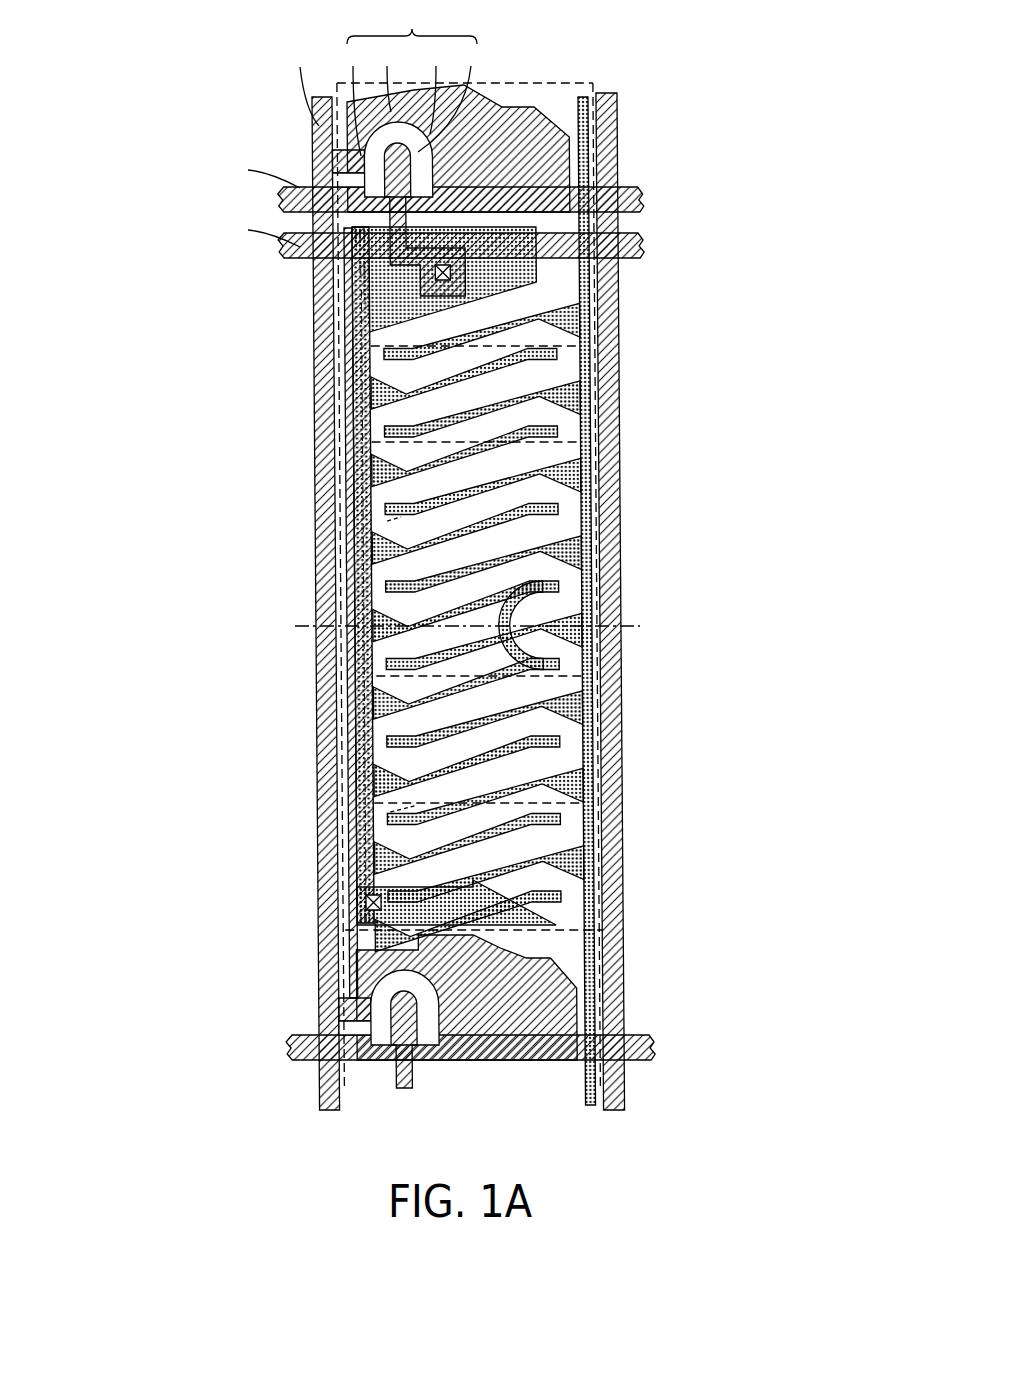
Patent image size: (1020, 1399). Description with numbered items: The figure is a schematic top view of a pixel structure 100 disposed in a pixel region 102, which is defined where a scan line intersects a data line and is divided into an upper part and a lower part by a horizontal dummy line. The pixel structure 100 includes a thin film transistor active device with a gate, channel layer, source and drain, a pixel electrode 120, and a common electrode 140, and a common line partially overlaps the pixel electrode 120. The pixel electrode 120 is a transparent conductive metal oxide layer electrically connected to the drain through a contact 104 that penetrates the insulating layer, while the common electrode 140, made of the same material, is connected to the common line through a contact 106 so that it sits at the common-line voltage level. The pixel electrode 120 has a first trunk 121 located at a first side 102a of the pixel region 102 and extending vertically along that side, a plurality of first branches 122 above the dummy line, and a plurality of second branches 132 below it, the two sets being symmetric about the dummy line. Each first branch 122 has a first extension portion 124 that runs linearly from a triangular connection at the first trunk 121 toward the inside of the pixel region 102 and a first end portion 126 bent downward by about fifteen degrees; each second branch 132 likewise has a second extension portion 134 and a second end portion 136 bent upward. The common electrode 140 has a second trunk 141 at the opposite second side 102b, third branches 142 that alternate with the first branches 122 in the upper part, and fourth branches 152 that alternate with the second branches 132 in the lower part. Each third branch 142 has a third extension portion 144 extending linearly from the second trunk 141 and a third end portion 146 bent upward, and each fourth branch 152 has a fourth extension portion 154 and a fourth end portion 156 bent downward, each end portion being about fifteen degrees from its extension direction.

The pixel structure 100 is at (413, 611).
The pixel region 102 is at (532, 82).
The first side 102a is at (343, 520).
The second side 102b is at (596, 499).
The contact 104 is at (538, 260).
The contact 106 is at (363, 902).
The pixel electrode 120 is at (410, 723).
The first trunk 121 is at (352, 318).
The first branches 122 is at (559, 486).
The first extension portion 124 is at (548, 362).
The first end portion 126 is at (516, 358).
The second branches 132 is at (559, 782).
The second extension portion 134 is at (522, 748).
The second end portion 136 is at (545, 752).
The common electrode 140 is at (429, 658).
The second trunk 141 is at (587, 214).
The third branches 142 is at (362, 613).
The third extension portion 144 is at (347, 502).
The third end portion 146 is at (445, 458).
The fourth branches 152 is at (377, 579).
The fourth extension portion 154 is at (445, 750).
The fourth end portion 156 is at (400, 792).